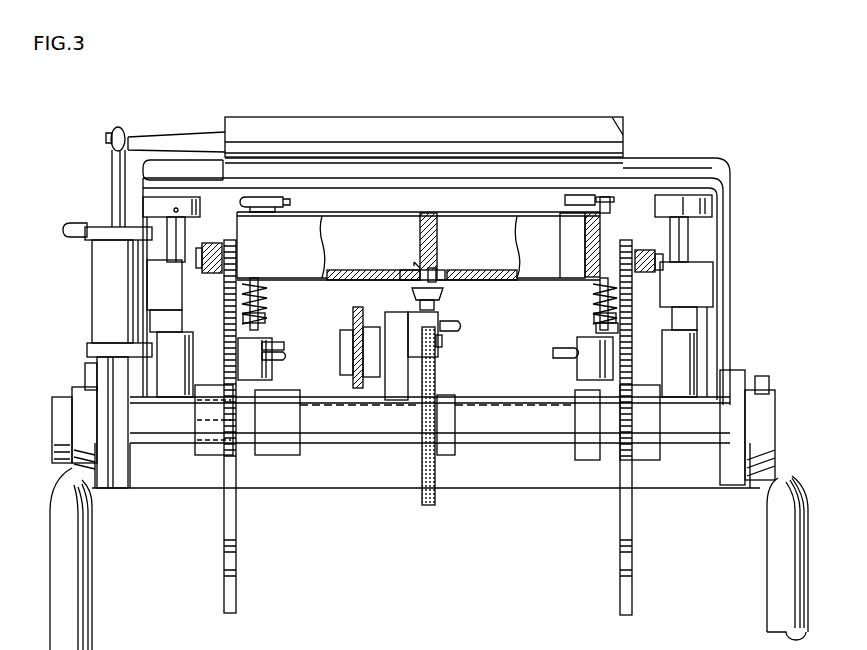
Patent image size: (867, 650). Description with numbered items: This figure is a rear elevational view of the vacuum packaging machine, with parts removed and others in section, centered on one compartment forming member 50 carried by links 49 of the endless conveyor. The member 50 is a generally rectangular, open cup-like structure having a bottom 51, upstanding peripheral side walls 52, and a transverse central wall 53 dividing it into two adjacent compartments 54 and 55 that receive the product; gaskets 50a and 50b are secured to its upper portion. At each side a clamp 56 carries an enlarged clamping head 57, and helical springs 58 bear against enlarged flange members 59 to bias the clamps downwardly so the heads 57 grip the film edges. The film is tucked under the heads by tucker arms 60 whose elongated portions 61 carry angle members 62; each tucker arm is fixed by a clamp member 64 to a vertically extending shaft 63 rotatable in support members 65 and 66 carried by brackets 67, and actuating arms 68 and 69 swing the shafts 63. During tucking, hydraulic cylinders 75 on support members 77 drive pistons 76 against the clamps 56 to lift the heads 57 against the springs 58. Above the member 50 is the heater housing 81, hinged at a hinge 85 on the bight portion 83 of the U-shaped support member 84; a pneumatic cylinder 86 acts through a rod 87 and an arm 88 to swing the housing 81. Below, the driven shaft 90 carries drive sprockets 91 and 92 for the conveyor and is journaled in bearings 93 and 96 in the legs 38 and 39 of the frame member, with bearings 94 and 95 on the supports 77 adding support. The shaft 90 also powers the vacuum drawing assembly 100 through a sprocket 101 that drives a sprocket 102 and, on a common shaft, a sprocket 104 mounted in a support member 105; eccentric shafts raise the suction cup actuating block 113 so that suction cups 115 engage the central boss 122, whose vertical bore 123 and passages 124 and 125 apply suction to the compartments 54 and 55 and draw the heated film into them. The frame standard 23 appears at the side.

The inverted U-shaped standard 23 is at (770, 606).
The leg of frame member 38 is at (118, 486).
The leg of frame member 39 is at (745, 490).
The link 49 is at (212, 248).
The compartment forming member 50 is at (330, 280).
The gasket 50a is at (605, 210).
The gasket 50b is at (232, 207).
The bottom 51 is at (362, 280).
The peripheral side wall 52 is at (310, 215).
The transverse central wall 53 is at (430, 225).
The compartment 54 is at (378, 225).
The compartment 55 is at (490, 225).
The clamp 56 is at (585, 262).
The clamping head 57 is at (250, 207).
The helical spring 58 is at (262, 285).
The enlarged flange member 59 is at (262, 318).
The tucker arm 60 is at (150, 195).
The elongated portion 61 is at (288, 202).
The angle member 62 is at (580, 213).
The vertically extending shaft 63 is at (170, 245).
The clamp member 64 is at (150, 207).
The support member 65 is at (162, 285).
The support member 66 is at (180, 350).
The bracket 67 is at (148, 322).
The actuating arm 68 is at (375, 403).
The actuating arm 69 is at (526, 398).
The hydraulic cylinder 75 is at (248, 358).
The piston 76 is at (272, 345).
The support member 77 is at (275, 356).
The housing 81 is at (503, 92).
The bight portion 83 is at (692, 165).
The U-shaped support member 84 is at (730, 190).
The hinge 85 is at (605, 150).
The pneumatic cylinder 86 is at (100, 280).
The rod 87 is at (115, 168).
The arm 88 is at (188, 140).
The driven shaft 90 is at (490, 445).
The drive sprocket 91 is at (237, 590).
The drive sprocket 92 is at (620, 588).
The bearing 93 is at (775, 385).
The bearing 94 is at (565, 445).
The bearing 95 is at (290, 447).
The bearing 96 is at (72, 462).
The vacuum drawing assembly 100 is at (449, 410).
The sprocket 101 is at (432, 507).
The sprocket 102 is at (440, 340).
The sprocket 104 is at (353, 315).
The support member 105 is at (402, 303).
The suction cup actuating block 113 is at (440, 318).
The suction cup 115 is at (435, 292).
The central boss 122 is at (405, 275).
The vertical bore 123 is at (432, 270).
The passage 124 is at (417, 262).
The passage 125 is at (445, 272).